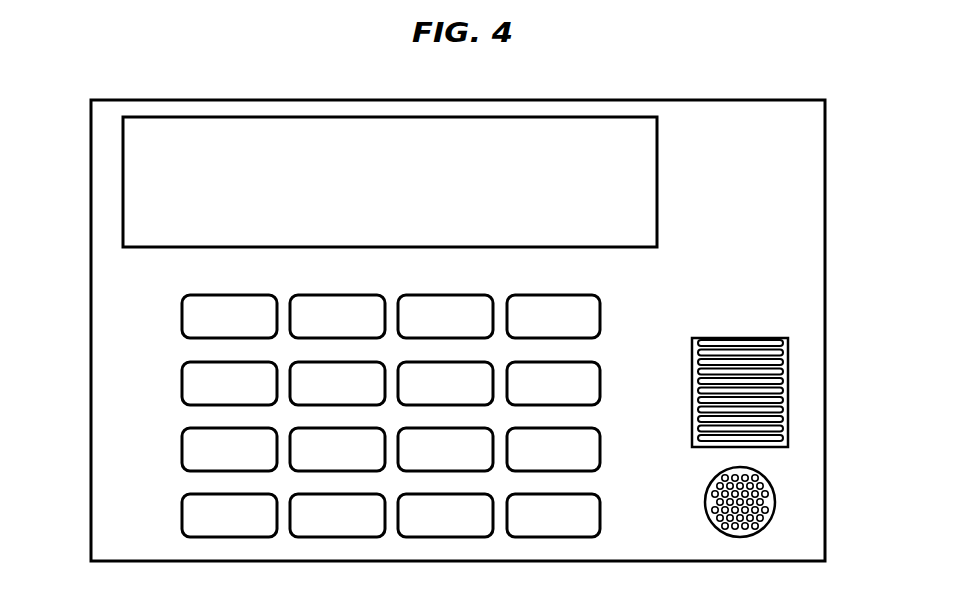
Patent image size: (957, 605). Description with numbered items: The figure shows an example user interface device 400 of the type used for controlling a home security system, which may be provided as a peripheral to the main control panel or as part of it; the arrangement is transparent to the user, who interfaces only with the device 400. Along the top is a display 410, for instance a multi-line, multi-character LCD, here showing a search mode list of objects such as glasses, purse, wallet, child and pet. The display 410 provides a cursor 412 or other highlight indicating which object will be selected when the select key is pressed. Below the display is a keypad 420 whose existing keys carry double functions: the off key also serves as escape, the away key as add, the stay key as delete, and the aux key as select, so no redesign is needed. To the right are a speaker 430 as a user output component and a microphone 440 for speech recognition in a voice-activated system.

The user interface device 400 is at (708, 100).
The display 410 is at (123, 152).
The cursor 412 is at (203, 195).
The keypad 420 is at (145, 385).
The speaker 430 is at (780, 358).
The microphone 440 is at (765, 495).